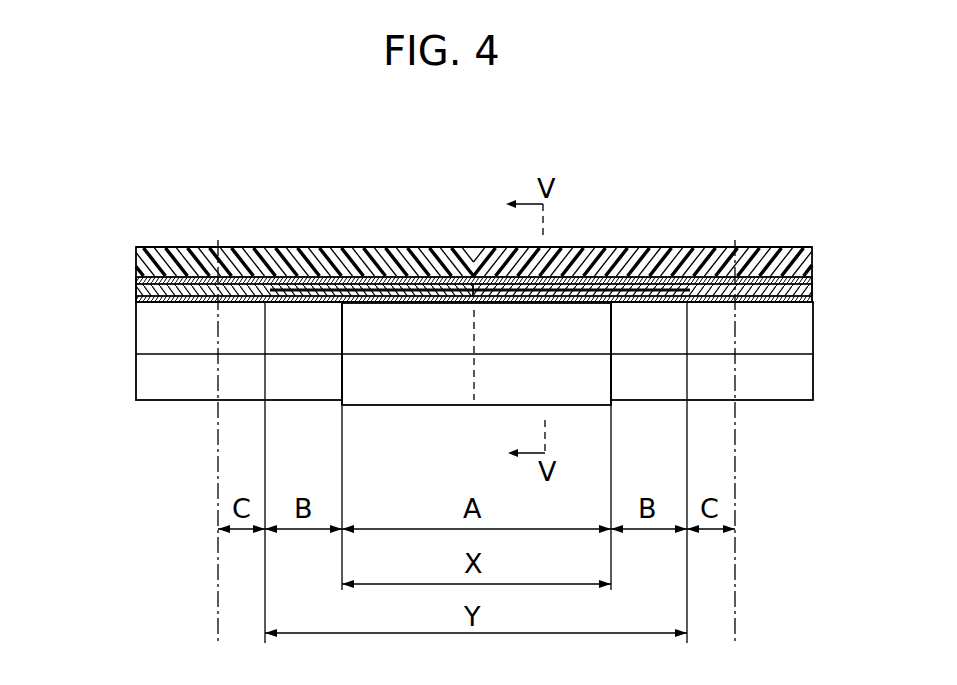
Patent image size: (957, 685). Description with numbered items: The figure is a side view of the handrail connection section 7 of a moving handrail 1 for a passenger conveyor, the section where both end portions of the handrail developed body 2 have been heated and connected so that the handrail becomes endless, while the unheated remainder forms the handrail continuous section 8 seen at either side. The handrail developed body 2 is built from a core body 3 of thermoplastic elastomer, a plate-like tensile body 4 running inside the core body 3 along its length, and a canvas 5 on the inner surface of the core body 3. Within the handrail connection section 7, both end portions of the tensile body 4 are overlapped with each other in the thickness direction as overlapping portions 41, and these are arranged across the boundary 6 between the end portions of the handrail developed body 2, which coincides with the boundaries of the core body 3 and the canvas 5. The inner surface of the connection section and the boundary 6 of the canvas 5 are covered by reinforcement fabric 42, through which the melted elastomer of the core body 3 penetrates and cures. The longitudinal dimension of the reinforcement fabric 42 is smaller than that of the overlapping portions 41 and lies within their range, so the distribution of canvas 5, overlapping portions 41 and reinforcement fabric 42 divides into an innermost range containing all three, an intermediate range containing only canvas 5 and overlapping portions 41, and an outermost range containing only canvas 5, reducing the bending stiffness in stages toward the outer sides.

The moving handrail 1 is at (100, 230).
The handrail developed body 2 is at (192, 400).
The core body 3 is at (208, 288).
The tensile body 4 is at (158, 280).
The canvas 5 is at (150, 302).
The boundary 6 is at (474, 378).
The handrail connection section 7 is at (358, 248).
The handrail continuous section 8 is at (182, 247).
The overlapping portions 41 is at (642, 290).
The reinforcement fabric 42 is at (341, 378).